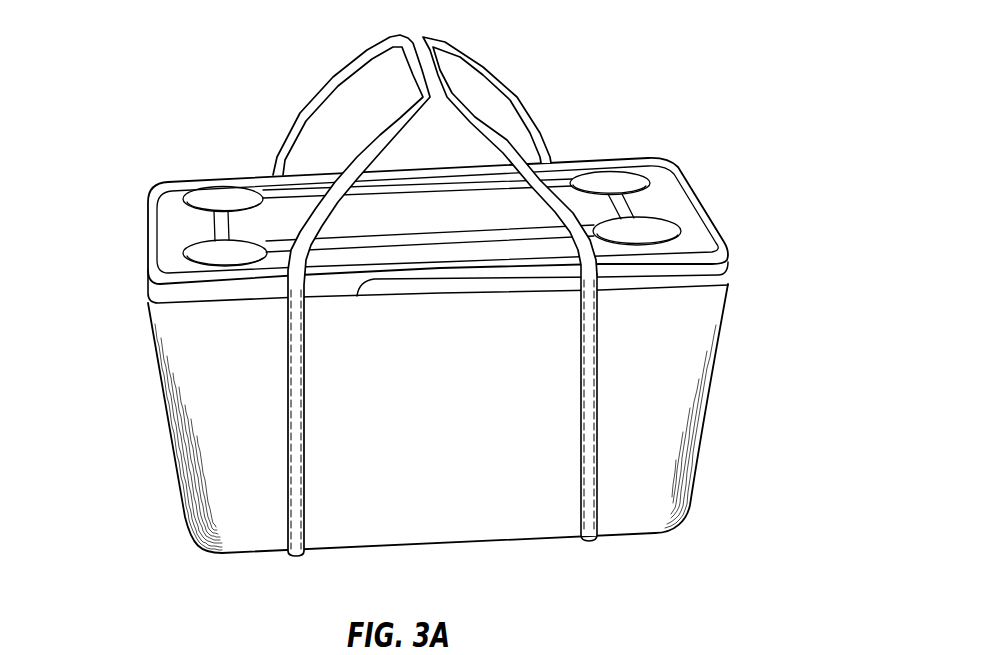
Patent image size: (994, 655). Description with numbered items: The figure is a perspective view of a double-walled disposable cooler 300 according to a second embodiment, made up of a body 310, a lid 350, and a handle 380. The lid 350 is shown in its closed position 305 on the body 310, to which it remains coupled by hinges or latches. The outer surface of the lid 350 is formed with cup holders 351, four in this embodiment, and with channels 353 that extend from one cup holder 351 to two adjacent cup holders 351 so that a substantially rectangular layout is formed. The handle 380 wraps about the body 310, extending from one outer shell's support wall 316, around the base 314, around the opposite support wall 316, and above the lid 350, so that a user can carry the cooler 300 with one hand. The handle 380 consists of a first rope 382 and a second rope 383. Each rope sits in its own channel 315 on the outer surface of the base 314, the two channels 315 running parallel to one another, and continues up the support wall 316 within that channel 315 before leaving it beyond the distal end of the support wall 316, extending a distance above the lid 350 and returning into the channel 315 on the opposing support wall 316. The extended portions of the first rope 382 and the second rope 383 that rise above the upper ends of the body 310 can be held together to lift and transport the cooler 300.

The double-walled disposable cooler 300 is at (795, 76).
The closed position 305 is at (134, 277).
The body 310 is at (707, 377).
The base 314 is at (500, 545).
The channel 315 is at (592, 500).
The outer shell's support wall 316 is at (650, 443).
The lid 350 is at (702, 241).
The cup holder 351 is at (614, 184).
The channel 353 is at (624, 212).
The handle 380 is at (506, 46).
The first rope 382 is at (510, 88).
The second rope 383 is at (339, 66).